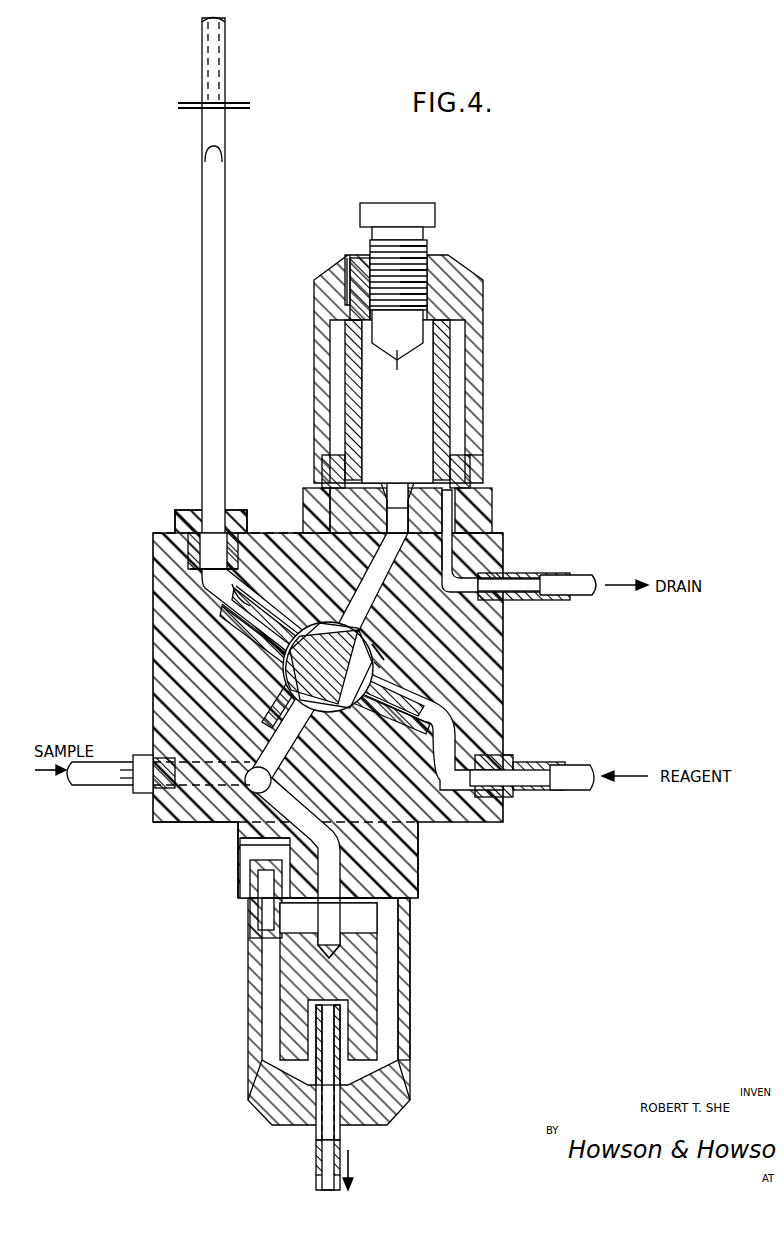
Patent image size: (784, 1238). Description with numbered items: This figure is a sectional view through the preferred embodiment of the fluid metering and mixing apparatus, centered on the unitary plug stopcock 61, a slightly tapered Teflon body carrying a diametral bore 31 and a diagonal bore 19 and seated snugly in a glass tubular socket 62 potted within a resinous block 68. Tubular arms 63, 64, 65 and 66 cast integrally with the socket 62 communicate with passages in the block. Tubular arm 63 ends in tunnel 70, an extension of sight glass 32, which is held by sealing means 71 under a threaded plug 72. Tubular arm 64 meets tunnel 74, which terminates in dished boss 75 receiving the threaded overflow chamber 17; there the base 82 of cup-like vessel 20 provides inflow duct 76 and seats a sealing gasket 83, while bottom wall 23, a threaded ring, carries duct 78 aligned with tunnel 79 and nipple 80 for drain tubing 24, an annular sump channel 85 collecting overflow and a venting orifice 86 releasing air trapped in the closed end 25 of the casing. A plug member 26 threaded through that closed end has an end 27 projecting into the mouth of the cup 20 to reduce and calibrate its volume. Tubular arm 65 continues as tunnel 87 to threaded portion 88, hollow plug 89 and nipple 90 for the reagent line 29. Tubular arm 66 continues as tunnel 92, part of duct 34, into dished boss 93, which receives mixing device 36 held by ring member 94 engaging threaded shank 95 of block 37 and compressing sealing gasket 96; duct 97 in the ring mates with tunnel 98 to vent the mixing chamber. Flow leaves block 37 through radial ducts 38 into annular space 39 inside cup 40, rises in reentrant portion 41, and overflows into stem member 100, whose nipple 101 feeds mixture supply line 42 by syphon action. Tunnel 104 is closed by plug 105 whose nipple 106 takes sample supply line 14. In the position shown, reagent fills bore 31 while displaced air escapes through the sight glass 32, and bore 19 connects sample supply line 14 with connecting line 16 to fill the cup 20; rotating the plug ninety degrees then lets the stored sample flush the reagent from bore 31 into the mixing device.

The sample supply line 14 is at (85, 782).
The connecting line 16 is at (372, 572).
The overflow chamber 17 is at (484, 356).
The bore 19 is at (327, 673).
The cup-like vessel 20 is at (455, 420).
The bottom wall 23 is at (470, 472).
The drain tubing 24 is at (576, 580).
The closed end of casing 25 is at (320, 356).
The plug member 26 is at (402, 202).
The end of plug member 27 is at (397, 349).
The reagent line 29 is at (582, 766).
The bore 31 is at (296, 623).
The sight glass 32 is at (202, 381).
The duct 34 is at (335, 906).
The mixing device 36 is at (248, 960).
The block of mixing device 37 is at (372, 988).
The radial ducts 38 is at (340, 946).
The annular space 39 is at (390, 1010).
The cup 40 is at (405, 1070).
The reentrant portion 41 is at (322, 1016).
The mixture supply line 42 is at (318, 1160).
The plug stopcock 61 is at (380, 650).
The tubular socket 62 is at (383, 666).
The tubular arm 63 is at (242, 585).
The tubular arm 64 is at (450, 606).
The tubular arm 65 is at (425, 704).
The tubular arm 66 is at (268, 724).
The resinous block 68 is at (553, 536).
The tunnel 70 is at (204, 591).
The sealing means 71 is at (188, 566).
The plug 72 is at (186, 510).
The tunnel 74 is at (342, 508).
The dished boss 75 is at (488, 502).
The inflow duct 76 is at (403, 490).
The duct 78 is at (470, 530).
The tunnel 79 is at (452, 560).
The nipple 80 is at (520, 578).
The base of cup 82 is at (322, 496).
The sealing gasket 83 is at (376, 495).
The annular sump channel 85 is at (466, 462).
The venting orifice 86 is at (346, 258).
The tunnel 87 is at (450, 792).
The threaded portion 88 is at (500, 800).
The hollow plug 89 is at (506, 755).
The nipple 90 is at (522, 765).
The tunnel 92 is at (262, 792).
The dished boss 93 is at (418, 856).
The ring member 94 is at (410, 886).
The threaded shank 95 is at (258, 905).
The sealing gasket 96 is at (250, 880).
The duct 97 is at (262, 852).
The tunnel 98 is at (246, 846).
The stem member 100 is at (318, 1042).
The nipple 101 is at (320, 1134).
The tunnel 104 is at (163, 823).
The plug 105 is at (143, 793).
The nipple 106 is at (141, 757).